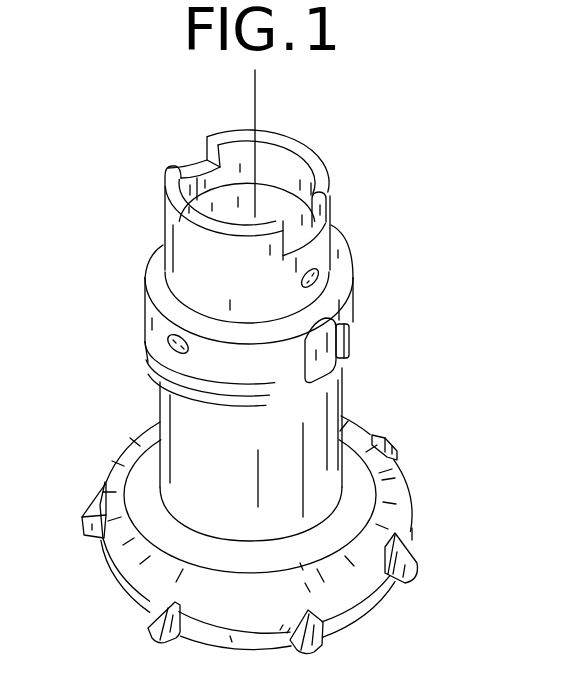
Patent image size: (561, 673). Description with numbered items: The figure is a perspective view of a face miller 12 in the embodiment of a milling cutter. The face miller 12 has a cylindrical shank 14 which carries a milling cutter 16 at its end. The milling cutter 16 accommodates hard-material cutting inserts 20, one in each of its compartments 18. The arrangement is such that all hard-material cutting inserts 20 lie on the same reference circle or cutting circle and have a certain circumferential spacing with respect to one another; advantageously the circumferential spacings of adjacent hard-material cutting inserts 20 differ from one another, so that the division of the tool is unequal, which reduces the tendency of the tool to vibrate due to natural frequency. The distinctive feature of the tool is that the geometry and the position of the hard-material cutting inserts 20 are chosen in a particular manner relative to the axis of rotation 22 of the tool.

The face miller 12 is at (117, 310).
The cylindrical shank 14 is at (325, 407).
The milling cutter 16 is at (402, 500).
The compartments 18 is at (383, 597).
The hard-material cutting inserts 20 is at (418, 568).
The axis of rotation 22 is at (258, 98).